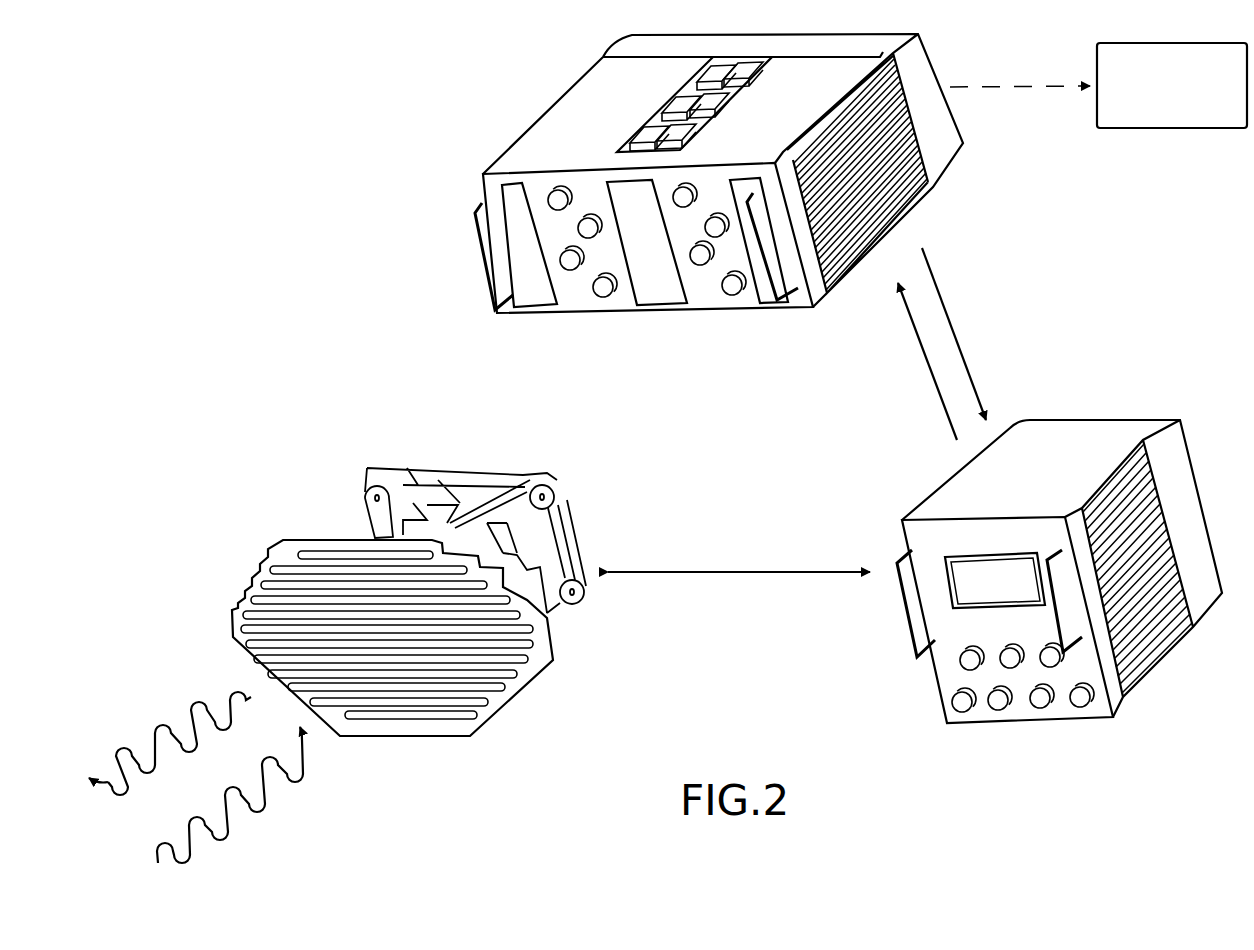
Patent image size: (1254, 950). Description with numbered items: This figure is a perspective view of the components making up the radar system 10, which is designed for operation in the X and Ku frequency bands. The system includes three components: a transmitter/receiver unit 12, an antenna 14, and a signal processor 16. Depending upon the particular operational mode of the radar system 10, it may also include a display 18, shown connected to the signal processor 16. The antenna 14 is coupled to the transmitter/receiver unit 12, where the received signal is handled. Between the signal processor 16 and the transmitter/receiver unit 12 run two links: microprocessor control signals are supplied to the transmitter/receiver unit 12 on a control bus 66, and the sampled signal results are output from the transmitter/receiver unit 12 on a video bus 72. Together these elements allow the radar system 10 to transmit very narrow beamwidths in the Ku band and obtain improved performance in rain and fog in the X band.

The radar system 10 is at (368, 151).
The transmitter/receiver unit 12 is at (1156, 414).
The antenna 14 is at (298, 534).
The signal processor 16 is at (552, 104).
The display 18 is at (1201, 40).
The control bus 66 is at (954, 326).
The video bus 72 is at (923, 355).